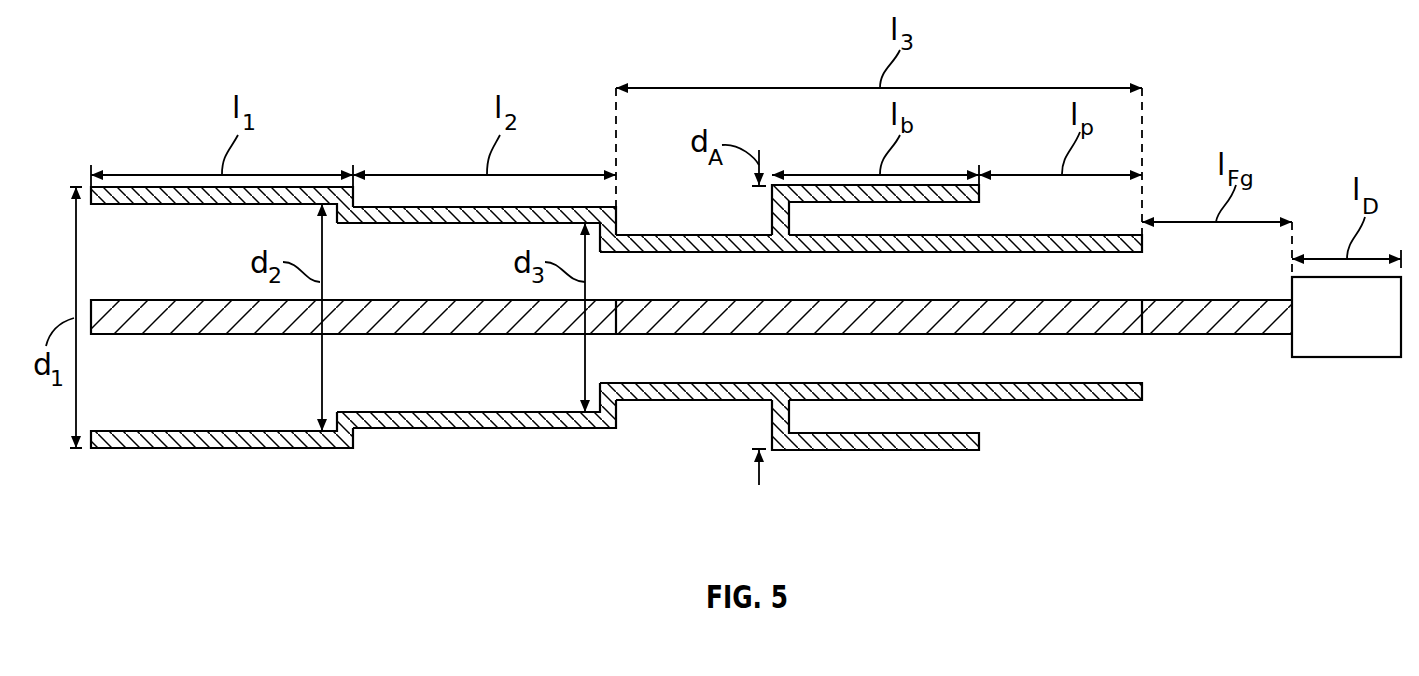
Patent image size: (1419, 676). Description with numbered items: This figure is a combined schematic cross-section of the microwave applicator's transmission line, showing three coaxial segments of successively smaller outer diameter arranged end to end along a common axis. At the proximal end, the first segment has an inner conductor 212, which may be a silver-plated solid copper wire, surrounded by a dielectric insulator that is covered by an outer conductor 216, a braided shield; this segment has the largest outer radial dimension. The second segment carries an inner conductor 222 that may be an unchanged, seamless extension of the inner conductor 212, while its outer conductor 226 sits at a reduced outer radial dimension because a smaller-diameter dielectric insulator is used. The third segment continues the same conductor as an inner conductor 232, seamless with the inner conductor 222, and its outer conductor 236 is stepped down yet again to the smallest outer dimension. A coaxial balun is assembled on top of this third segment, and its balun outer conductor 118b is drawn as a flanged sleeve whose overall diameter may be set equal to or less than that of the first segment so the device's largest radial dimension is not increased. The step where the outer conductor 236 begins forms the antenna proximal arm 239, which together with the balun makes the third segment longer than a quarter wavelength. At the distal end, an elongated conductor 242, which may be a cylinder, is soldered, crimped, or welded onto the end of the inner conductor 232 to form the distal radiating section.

The inner conductor 212 is at (167, 327).
The outer conductor 216 is at (200, 447).
The inner conductor 222 is at (455, 327).
The outer conductor 226 is at (448, 427).
The inner conductor 232 is at (737, 328).
The outer conductor 236 is at (657, 398).
The antenna proximal arm 239 is at (627, 410).
The elongated conductor 242 is at (1303, 366).
The balun outer conductor 118b is at (882, 443).